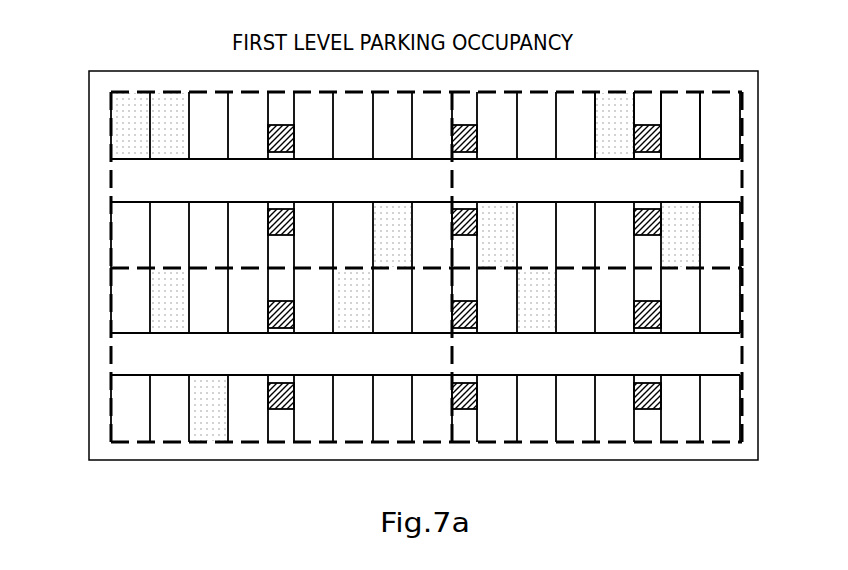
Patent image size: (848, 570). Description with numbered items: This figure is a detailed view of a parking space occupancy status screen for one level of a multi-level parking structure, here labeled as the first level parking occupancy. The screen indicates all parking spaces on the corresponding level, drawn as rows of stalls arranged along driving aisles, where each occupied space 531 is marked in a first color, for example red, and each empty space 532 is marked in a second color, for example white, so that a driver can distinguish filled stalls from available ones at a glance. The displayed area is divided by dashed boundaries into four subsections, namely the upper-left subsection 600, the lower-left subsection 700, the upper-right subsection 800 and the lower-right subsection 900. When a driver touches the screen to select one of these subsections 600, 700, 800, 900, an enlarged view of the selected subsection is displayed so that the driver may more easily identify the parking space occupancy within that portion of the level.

The occupied space 531 is at (620, 103).
The empty space 532 is at (688, 105).
The subsection 600 is at (111, 190).
The subsection 700 is at (111, 346).
The subsection 800 is at (742, 189).
The subsection 900 is at (742, 343).